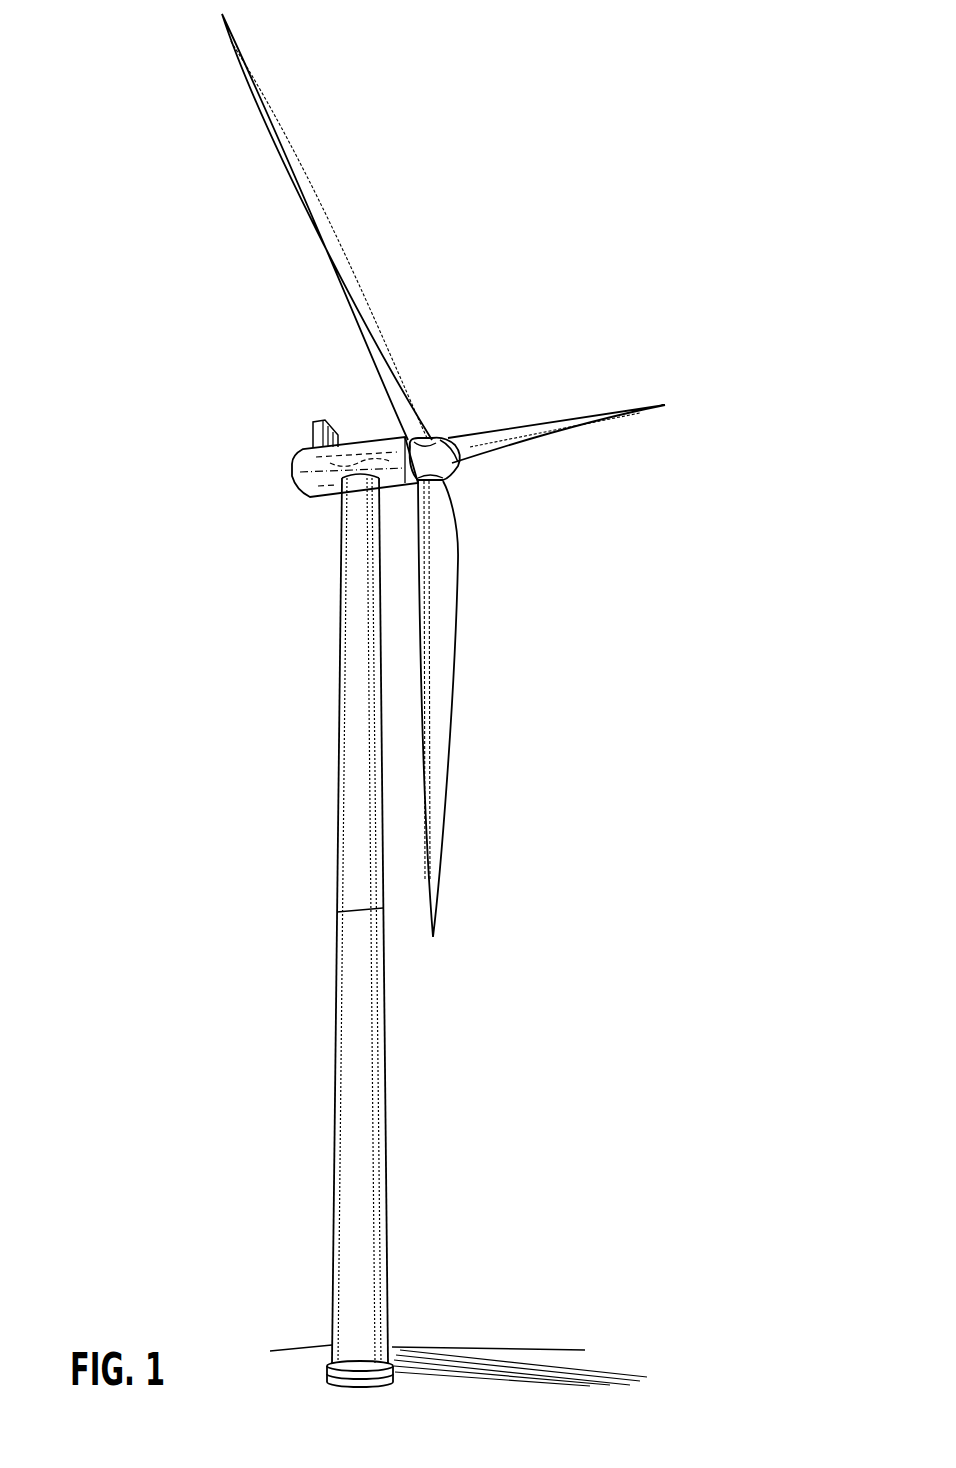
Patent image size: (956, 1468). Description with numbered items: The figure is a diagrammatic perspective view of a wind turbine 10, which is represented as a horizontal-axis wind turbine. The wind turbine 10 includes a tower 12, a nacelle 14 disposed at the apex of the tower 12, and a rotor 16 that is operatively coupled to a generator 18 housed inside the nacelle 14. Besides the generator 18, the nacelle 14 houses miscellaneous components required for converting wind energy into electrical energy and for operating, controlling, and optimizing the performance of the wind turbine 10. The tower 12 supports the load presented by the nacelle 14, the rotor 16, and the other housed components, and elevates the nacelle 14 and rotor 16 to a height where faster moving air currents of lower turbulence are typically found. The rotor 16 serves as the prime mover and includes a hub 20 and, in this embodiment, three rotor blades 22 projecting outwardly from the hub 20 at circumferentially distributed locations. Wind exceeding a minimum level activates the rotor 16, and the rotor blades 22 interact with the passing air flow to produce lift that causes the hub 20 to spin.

The wind turbine 10 is at (630, 246).
The tower 12 is at (337, 842).
The nacelle 14 is at (300, 449).
The rotor 16 is at (463, 473).
The generator 18 is at (350, 452).
The hub 20 is at (440, 440).
The rotor blade 22 is at (397, 335).